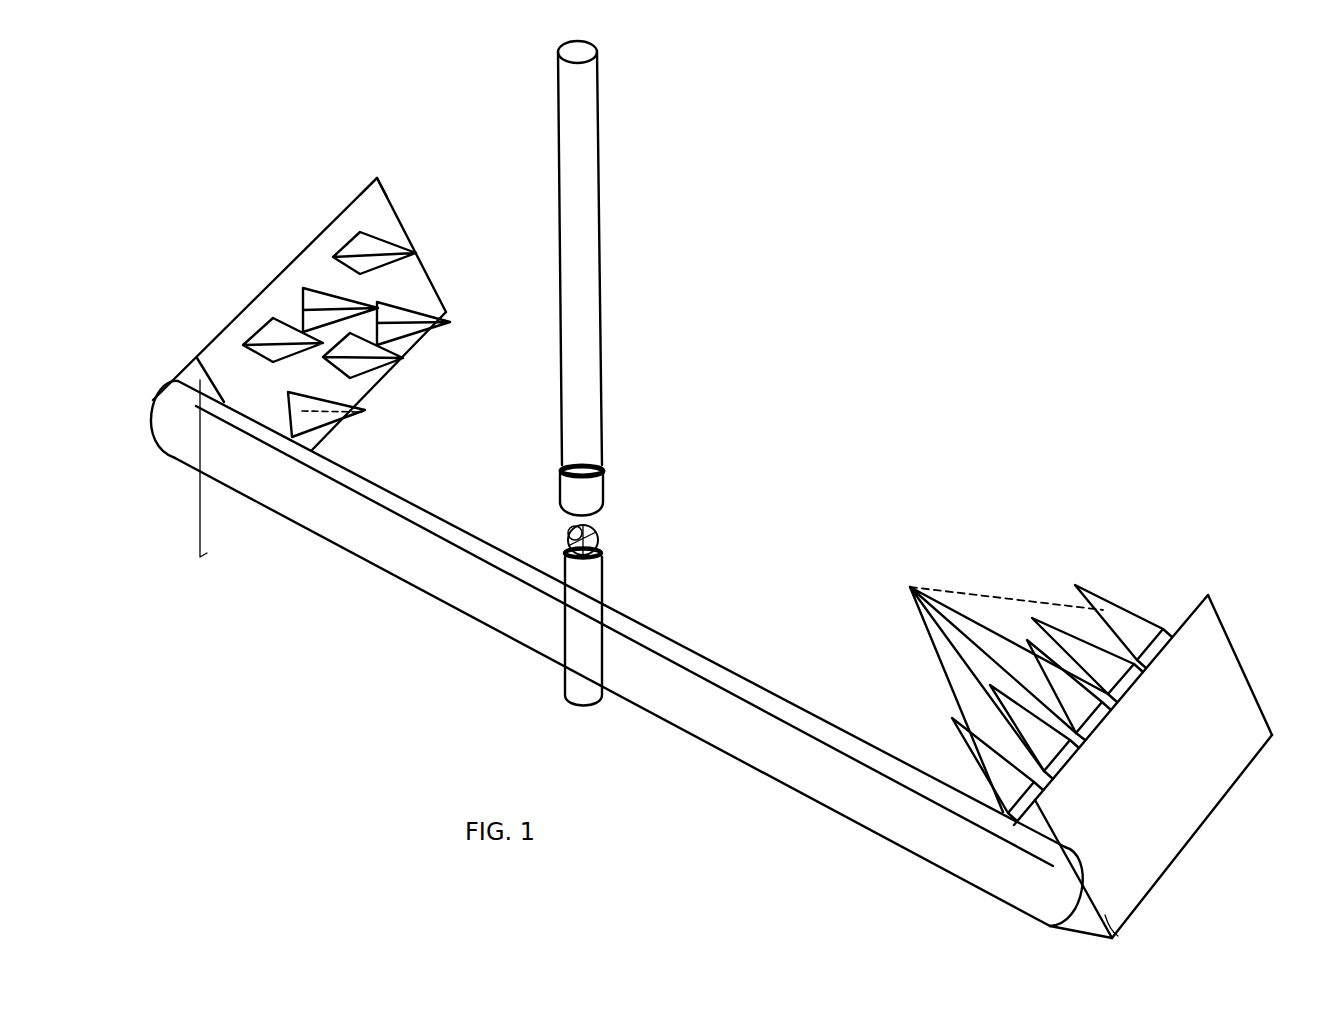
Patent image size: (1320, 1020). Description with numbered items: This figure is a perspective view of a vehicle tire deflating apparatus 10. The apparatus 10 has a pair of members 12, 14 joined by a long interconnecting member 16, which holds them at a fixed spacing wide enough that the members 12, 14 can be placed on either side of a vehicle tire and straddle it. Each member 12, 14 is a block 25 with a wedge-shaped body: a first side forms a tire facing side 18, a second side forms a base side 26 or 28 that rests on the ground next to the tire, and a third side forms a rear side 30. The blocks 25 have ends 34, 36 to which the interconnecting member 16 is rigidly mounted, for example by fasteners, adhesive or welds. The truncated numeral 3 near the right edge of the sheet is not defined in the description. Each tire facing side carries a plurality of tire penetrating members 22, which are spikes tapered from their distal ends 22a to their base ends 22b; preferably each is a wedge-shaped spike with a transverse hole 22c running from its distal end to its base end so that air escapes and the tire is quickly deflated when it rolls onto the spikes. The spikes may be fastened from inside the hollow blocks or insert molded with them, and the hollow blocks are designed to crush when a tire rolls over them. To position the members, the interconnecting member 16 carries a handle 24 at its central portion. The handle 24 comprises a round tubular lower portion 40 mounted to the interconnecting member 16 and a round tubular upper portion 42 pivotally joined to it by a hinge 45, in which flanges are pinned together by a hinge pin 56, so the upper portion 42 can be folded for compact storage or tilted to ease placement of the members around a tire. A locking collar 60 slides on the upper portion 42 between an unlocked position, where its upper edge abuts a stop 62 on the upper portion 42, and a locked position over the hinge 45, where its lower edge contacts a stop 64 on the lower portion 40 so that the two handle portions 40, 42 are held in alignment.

The vehicle tire deflating apparatus 10 is at (968, 262).
The member 12 is at (292, 243).
The member 14 is at (1215, 572).
The interconnecting member 16 is at (712, 735).
The tire facing side 18 is at (372, 209).
The tire penetrating members 22 is at (446, 312).
The distal end 22a is at (450, 322).
The base end 22b is at (302, 297).
The transverse hole 22c is at (373, 420).
The handle 24 is at (620, 336).
The block 25 is at (1232, 793).
The base side 26 is at (150, 420).
The base side 28 is at (1190, 848).
The rear side 30 is at (212, 362).
The plate surface 3 is at (1230, 707).
The end 34 is at (208, 495).
The end 36 is at (1118, 931).
The lower portion 40 is at (575, 637).
The upper portion 42 is at (585, 130).
The hinge 45 is at (601, 540).
The hinge pin 56 is at (566, 538).
The collar 60 is at (594, 497).
The stop 62 is at (607, 453).
The stop 64 is at (610, 553).